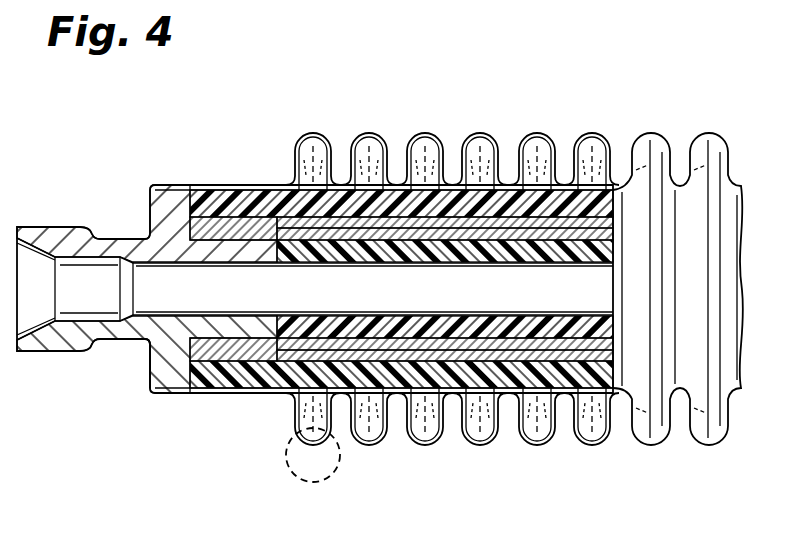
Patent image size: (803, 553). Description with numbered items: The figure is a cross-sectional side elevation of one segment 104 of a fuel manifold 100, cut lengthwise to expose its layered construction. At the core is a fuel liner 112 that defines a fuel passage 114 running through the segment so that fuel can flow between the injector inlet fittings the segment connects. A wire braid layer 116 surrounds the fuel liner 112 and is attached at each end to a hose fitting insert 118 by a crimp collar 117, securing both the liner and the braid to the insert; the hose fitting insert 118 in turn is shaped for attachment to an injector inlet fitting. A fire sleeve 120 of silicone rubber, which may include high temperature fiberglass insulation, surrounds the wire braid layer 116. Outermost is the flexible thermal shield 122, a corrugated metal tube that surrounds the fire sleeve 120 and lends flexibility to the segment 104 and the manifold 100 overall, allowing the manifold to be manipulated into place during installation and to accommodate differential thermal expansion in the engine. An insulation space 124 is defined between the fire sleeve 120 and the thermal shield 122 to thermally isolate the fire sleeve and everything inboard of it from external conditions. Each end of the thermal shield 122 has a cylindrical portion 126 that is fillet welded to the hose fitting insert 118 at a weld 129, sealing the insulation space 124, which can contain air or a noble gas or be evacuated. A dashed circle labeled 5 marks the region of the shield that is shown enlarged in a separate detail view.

The manifold 100 is at (152, 135).
The segment 104 is at (262, 184).
The fuel liner 112 is at (566, 246).
The fuel passage 114 is at (38, 302).
The wire braid layer 116 is at (398, 226).
The crimp collar 117 is at (240, 352).
The hose fitting insert 118 is at (84, 221).
The fire sleeve 120 is at (212, 203).
The thermal shield 122 is at (664, 127).
The insulation space 124 is at (423, 423).
The cylindrical portion 126 is at (183, 396).
The weld 129 is at (158, 395).
The detail circle for FIG. 5 is at (283, 469).